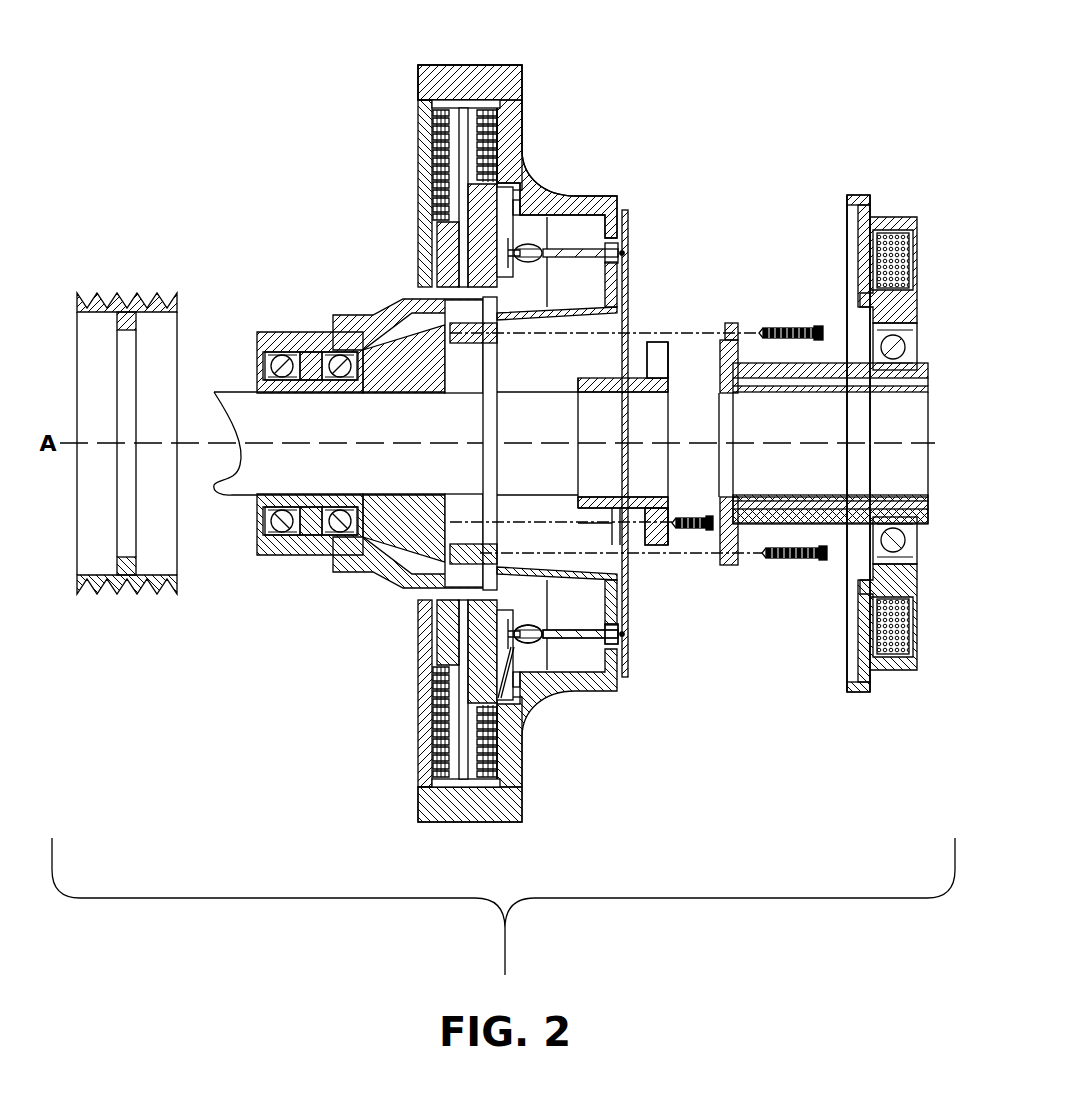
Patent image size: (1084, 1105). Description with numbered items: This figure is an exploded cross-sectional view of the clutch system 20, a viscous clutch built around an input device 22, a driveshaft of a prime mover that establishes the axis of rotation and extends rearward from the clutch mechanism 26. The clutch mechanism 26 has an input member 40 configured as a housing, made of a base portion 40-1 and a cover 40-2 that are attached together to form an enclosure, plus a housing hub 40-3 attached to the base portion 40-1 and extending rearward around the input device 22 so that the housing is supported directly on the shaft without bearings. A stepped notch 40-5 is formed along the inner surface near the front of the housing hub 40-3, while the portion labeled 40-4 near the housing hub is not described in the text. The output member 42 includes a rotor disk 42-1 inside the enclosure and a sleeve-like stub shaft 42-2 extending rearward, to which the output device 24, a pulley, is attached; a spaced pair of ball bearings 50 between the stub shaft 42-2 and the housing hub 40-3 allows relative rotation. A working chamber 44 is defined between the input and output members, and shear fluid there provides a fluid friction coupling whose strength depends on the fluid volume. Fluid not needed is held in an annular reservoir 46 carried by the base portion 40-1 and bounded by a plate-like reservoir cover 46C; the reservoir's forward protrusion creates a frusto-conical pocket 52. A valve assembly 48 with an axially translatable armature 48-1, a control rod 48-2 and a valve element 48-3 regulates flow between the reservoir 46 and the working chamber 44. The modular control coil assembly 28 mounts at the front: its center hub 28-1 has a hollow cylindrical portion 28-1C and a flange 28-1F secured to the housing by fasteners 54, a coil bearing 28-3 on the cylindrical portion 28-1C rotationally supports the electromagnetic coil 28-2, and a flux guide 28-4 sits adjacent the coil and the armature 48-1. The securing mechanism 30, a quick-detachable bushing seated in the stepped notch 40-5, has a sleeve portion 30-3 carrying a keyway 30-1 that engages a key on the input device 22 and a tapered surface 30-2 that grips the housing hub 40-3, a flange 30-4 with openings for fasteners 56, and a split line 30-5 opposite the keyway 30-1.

The clutch system 20 is at (735, 80).
The input device 22 is at (247, 490).
The output device 24 is at (78, 292).
The clutch mechanism 26 is at (418, 79).
The control coil assembly 28 is at (838, 176).
The center hub 28-1 is at (793, 360).
The flange 28-1F is at (732, 322).
The cylindrical portion 28-1C is at (930, 380).
The electromagnetic coil 28-2 is at (903, 667).
The coil bearing 28-3 is at (907, 555).
The flux guide 28-4 is at (862, 697).
The securing mechanism 30 is at (655, 341).
The keyway 30-1 is at (588, 495).
The tapered surface 30-2 is at (615, 520).
The sleeve portion 30-3 is at (600, 508).
The flange 30-4 is at (657, 544).
The split line 30-5 is at (663, 355).
The input member 40 is at (488, 824).
The base portion 40-1 is at (512, 760).
The cover 40-2 is at (423, 800).
The housing hub 40-3 is at (413, 527).
The rotor bearing housing 40-4 is at (272, 407).
The stepped notch 40-5 is at (470, 510).
The output member 42 is at (434, 631).
The rotor disk 42-1 is at (430, 658).
The stub shaft 42-2 is at (385, 316).
The working chamber 44 is at (436, 120).
The reservoir 46 is at (567, 653).
The reservoir cover 46C is at (525, 650).
The valve assembly 48 is at (596, 648).
The armature 48-1 is at (630, 660).
The control rod 48-2 is at (573, 622).
The valve element 48-3 is at (518, 675).
The bearings 50 is at (337, 532).
The pocket 52 is at (631, 319).
The fasteners 54 is at (823, 563).
The fasteners 56 is at (685, 517).